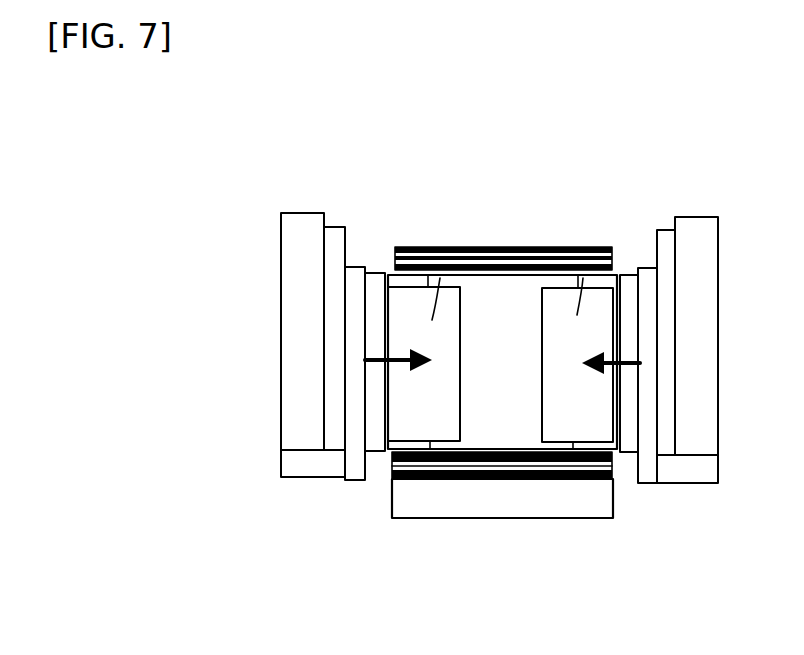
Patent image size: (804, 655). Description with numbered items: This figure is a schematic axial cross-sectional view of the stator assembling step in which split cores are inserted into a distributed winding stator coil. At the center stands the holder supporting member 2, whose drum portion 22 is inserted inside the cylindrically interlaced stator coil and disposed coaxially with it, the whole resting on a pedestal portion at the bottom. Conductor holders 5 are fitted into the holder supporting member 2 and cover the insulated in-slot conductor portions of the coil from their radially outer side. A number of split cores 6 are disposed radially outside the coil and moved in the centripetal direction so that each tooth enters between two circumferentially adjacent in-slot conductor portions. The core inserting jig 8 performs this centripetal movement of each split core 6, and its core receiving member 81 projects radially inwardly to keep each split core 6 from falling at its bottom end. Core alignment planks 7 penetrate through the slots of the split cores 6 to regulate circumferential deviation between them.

The holder supporting member 2 is at (499, 542).
The conductor holder 5 is at (463, 248).
The split core 6 is at (337, 398).
The core alignment plank 7 is at (350, 455).
The core inserting jig 8 is at (300, 236).
The core receiving member 81 is at (300, 460).
The drum portion 22 is at (465, 347).